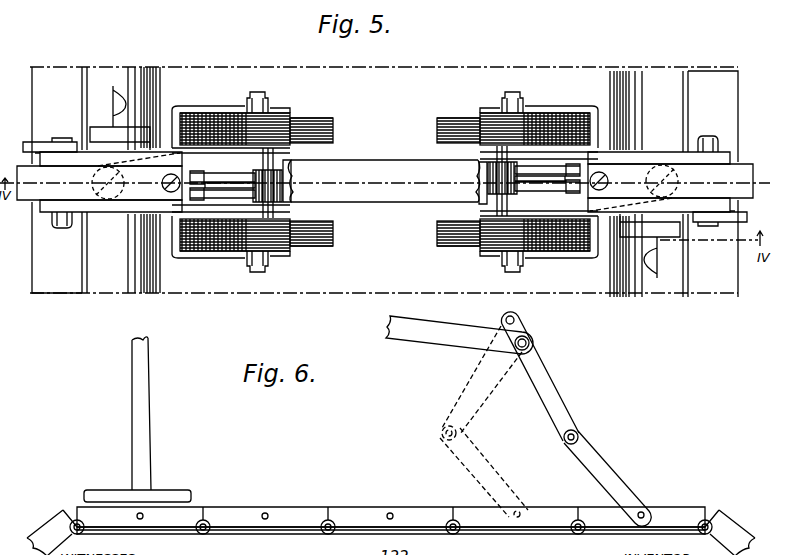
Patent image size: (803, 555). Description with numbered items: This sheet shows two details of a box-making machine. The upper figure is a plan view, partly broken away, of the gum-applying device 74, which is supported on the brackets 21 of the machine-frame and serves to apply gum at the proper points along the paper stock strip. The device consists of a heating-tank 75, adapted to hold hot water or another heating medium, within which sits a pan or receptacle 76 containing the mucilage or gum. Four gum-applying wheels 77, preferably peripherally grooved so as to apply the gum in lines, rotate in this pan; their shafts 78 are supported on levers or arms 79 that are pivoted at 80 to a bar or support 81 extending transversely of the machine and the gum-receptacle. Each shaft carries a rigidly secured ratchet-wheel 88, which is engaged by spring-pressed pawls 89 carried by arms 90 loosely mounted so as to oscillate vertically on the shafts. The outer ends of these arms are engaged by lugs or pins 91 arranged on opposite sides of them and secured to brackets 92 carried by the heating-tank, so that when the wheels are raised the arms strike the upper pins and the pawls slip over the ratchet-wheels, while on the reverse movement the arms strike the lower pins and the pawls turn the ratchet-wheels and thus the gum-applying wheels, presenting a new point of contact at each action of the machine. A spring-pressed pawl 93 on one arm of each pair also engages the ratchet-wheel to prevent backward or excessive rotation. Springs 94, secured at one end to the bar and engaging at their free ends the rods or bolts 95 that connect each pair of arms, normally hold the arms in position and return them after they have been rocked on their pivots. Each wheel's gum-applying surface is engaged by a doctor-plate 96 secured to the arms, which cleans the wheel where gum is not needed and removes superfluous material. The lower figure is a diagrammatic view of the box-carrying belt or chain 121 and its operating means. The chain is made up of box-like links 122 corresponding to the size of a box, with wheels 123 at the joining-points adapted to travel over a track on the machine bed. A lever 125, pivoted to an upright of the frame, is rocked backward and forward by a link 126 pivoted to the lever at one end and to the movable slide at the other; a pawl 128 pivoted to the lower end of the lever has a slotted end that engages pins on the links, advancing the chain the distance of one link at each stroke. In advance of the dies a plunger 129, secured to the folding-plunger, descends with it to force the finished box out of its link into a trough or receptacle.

In FIG. 5, the brackets 21 is at (738, 112).
In FIG. 5, the gum-applying device 74 is at (384, 166).
In FIG. 5, the heating-tank 75 is at (129, 282).
In FIG. 5, the pan or receptacle 76 is at (399, 63).
In FIG. 5, the gum-applying wheels 77 is at (322, 124).
In FIG. 5, the shafts 78 is at (259, 106).
In FIG. 5, the levers or arms 79 is at (80, 156).
In FIG. 5, the pivots 80 is at (159, 236).
In FIG. 5, the bar or support 81 is at (396, 165).
In FIG. 5, the ratchet-wheel 88 is at (291, 204).
In FIG. 5, the spring-pressed pawls 89 is at (237, 184).
In FIG. 5, the arms 90 is at (40, 145).
In FIG. 5, the lugs or pins 91 is at (100, 152).
In FIG. 5, the brackets 92 is at (116, 98).
In FIG. 5, the spring-pressed pawl 93 is at (489, 158).
In FIG. 5, the springs 94 is at (17, 170).
In FIG. 5, the rods or bolts 95 is at (60, 225).
In FIG. 5, the doctor-plate 96 is at (208, 112).
In FIG. 6, the endless carrying belt or chain 121 is at (391, 496).
In FIG. 6, the box-like links 122 is at (422, 497).
In FIG. 6, the wheels 123 is at (203, 534).
In FIG. 6, the lever 125 is at (562, 392).
In FIG. 6, the link 126 is at (447, 337).
In FIG. 6, the pawl 128 is at (549, 426).
In FIG. 6, the plunger 129 is at (137, 419).